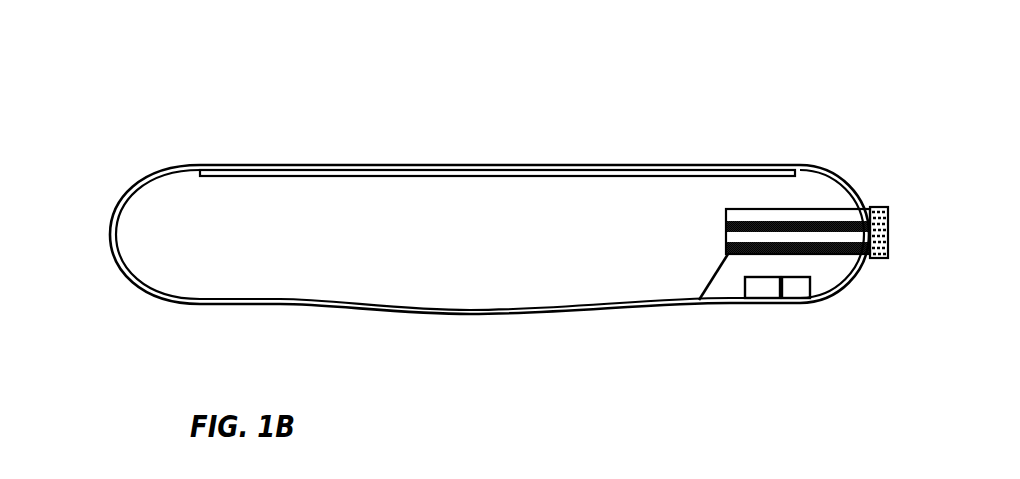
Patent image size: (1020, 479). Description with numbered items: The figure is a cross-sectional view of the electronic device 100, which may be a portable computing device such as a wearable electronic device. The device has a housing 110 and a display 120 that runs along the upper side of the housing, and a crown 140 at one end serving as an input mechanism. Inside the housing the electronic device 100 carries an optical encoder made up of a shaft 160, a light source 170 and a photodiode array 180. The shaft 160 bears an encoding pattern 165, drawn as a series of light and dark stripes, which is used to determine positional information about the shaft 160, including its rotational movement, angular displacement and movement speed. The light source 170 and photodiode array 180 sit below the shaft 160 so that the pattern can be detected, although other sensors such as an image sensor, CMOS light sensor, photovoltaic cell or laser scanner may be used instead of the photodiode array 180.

The electronic device 100 is at (212, 104).
The housing 110 is at (157, 167).
The display 120 is at (712, 170).
The crown 140 is at (888, 257).
The shaft 160 is at (700, 302).
The encoding pattern 165 is at (835, 213).
The light source 170 is at (816, 300).
The photodiode array 180 is at (774, 300).